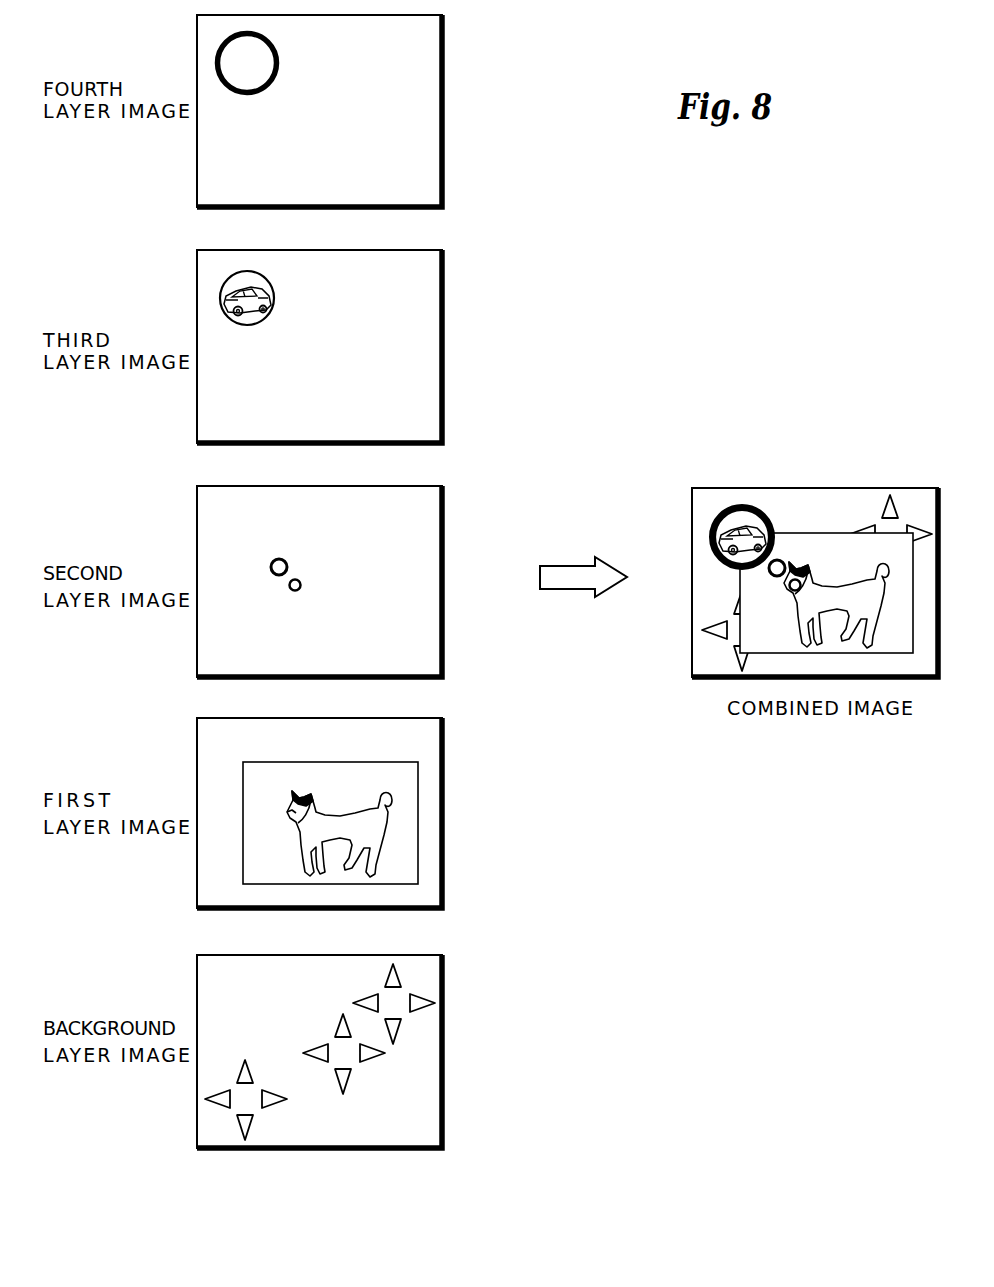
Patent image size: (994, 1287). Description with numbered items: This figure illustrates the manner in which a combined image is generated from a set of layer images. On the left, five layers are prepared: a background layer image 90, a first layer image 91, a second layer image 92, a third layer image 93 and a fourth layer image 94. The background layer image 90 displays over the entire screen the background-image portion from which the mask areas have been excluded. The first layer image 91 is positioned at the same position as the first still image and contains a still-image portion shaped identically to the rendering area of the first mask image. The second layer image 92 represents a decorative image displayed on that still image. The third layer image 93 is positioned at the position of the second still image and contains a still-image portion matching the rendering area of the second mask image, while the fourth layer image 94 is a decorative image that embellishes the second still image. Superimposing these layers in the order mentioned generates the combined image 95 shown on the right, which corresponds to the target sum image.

The background layer image 90 is at (445, 1062).
The first layer image 91 is at (445, 826).
The second layer image 92 is at (445, 577).
The third layer image 93 is at (441, 365).
The fourth layer image 94 is at (445, 142).
The combined image 95 is at (807, 487).